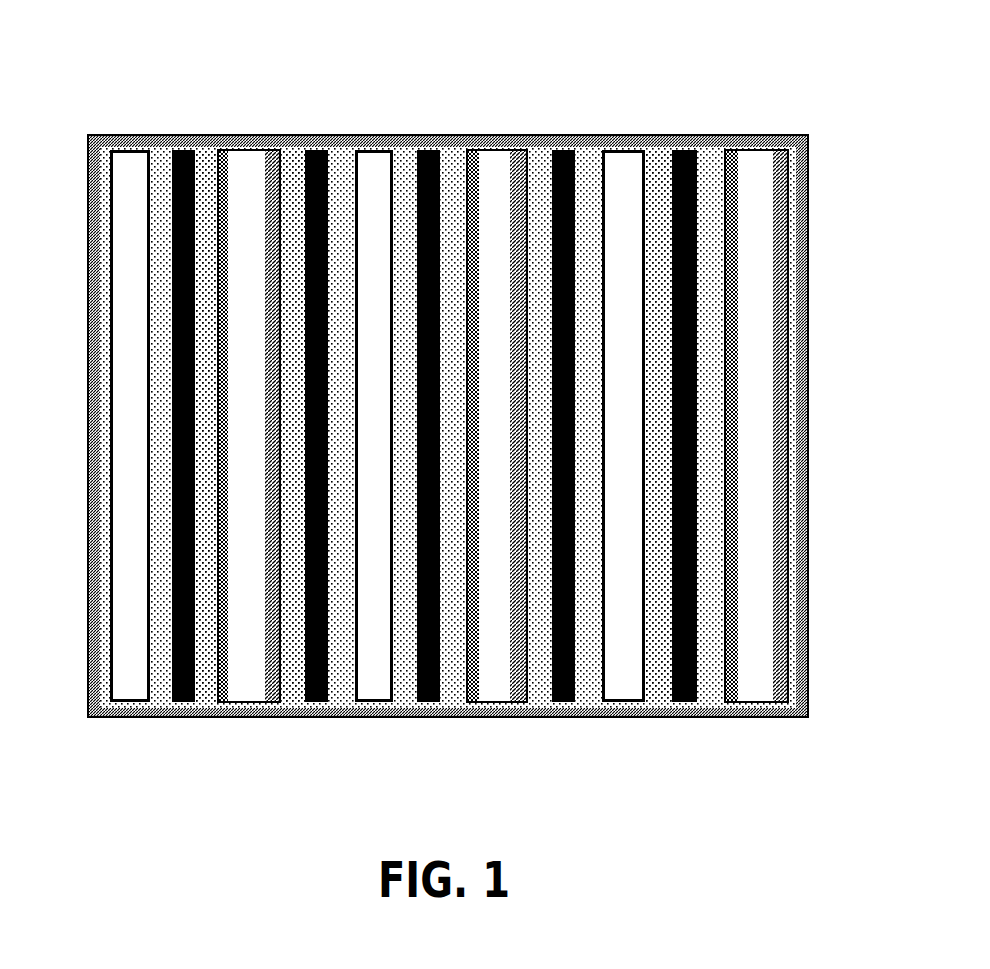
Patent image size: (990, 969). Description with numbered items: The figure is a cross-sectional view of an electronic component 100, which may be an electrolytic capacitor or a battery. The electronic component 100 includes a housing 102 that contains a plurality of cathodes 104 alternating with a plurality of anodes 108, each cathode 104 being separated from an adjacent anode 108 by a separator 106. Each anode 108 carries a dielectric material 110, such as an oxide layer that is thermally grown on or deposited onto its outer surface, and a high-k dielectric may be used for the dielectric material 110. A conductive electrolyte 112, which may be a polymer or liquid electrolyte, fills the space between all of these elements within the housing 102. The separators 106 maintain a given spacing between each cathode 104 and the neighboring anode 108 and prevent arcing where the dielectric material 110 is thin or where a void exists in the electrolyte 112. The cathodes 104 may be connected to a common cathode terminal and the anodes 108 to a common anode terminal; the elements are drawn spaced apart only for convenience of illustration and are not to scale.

The electronic component 100 is at (492, 31).
The housing 102 is at (809, 170).
The cathodes 104 is at (128, 717).
The separator 106 is at (195, 717).
The anodes 108 is at (256, 717).
The dielectric material 110 is at (212, 150).
The conductive electrolyte 112 is at (663, 165).